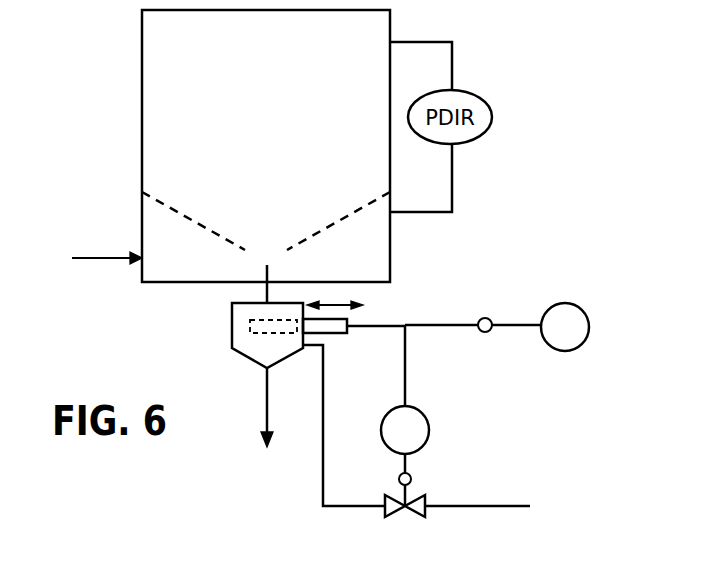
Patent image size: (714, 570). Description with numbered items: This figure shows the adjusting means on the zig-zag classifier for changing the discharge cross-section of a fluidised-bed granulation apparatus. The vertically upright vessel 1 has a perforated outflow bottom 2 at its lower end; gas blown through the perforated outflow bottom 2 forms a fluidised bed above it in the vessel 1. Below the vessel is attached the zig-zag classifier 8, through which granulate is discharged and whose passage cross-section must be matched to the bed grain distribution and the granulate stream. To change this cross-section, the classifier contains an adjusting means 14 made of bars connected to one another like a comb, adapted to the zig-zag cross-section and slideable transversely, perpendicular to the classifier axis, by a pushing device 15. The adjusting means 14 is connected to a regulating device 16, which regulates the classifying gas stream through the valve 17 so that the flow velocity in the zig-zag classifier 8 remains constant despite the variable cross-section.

The vessel 1 is at (141, 88).
The perforated outflow bottom 2 is at (345, 217).
The zig-zag classifier 8 is at (232, 338).
The adjusting means 14 is at (335, 334).
The pushing device 15 is at (554, 350).
The regulating device 16 is at (425, 416).
The valve 17 is at (418, 497).